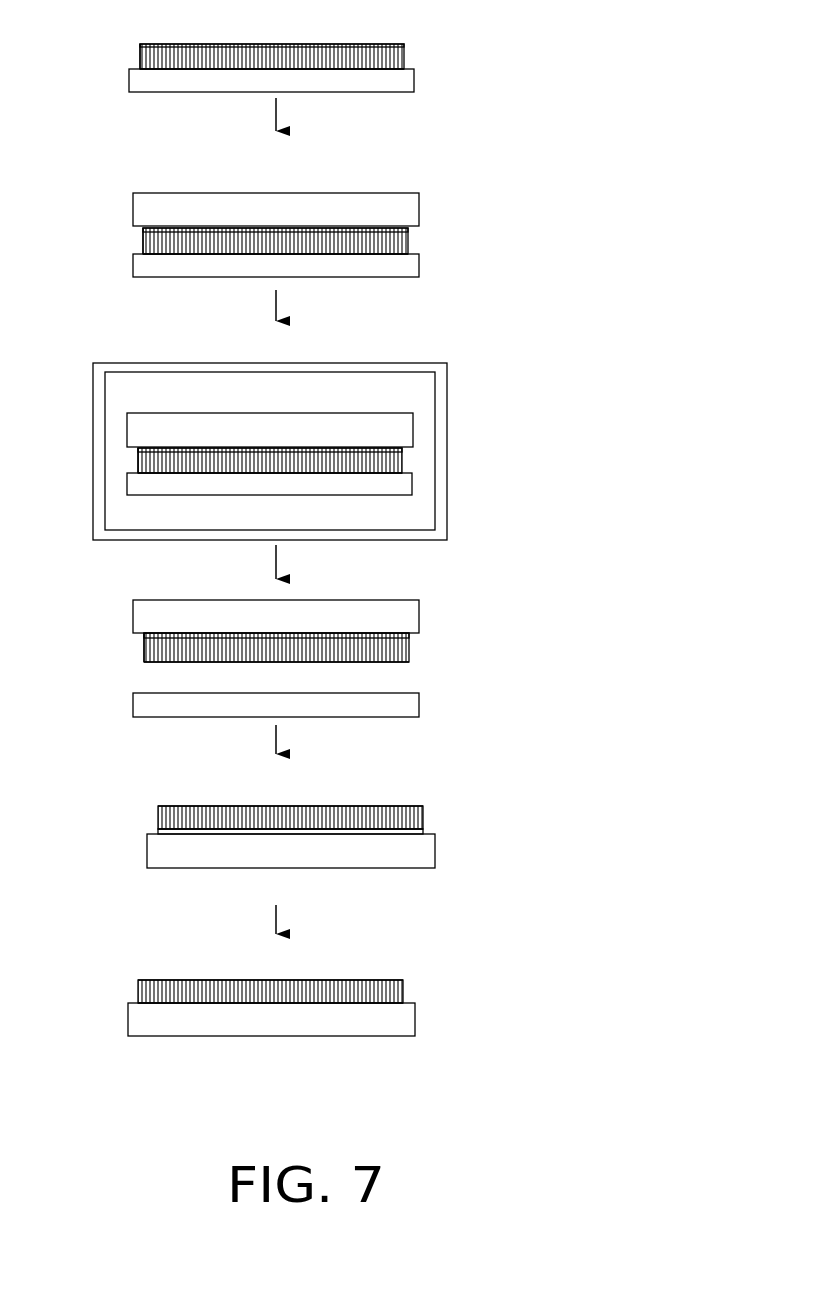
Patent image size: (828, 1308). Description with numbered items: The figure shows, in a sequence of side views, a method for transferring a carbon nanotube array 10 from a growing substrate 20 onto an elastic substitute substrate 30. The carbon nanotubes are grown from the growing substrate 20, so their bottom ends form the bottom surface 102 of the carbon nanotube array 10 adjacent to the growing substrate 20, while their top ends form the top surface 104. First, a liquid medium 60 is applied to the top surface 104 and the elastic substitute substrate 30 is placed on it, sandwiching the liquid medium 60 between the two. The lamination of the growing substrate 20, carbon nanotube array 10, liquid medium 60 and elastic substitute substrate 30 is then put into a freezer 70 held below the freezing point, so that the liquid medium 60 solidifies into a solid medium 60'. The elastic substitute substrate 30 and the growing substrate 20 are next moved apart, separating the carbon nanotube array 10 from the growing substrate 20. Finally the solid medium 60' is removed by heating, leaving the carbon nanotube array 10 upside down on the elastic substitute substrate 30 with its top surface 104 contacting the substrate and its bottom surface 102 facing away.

The carbon nanotube array 10 is at (408, 65).
The growing substrate 20 is at (405, 80).
The elastic substitute substrate 30 is at (408, 202).
The liquid medium 60 is at (312, 119).
The solid medium 60' is at (331, 623).
The freezer 70 is at (442, 522).
The bottom surface of the carbon nanotube array 102 is at (162, 70).
The top surface of the carbon nanotube array 104 is at (163, 48).